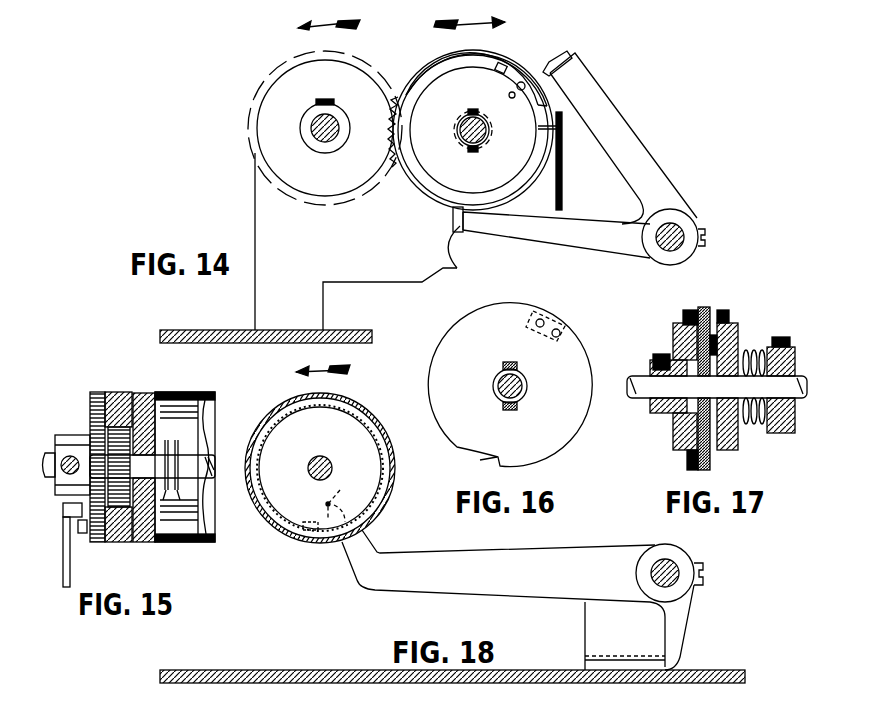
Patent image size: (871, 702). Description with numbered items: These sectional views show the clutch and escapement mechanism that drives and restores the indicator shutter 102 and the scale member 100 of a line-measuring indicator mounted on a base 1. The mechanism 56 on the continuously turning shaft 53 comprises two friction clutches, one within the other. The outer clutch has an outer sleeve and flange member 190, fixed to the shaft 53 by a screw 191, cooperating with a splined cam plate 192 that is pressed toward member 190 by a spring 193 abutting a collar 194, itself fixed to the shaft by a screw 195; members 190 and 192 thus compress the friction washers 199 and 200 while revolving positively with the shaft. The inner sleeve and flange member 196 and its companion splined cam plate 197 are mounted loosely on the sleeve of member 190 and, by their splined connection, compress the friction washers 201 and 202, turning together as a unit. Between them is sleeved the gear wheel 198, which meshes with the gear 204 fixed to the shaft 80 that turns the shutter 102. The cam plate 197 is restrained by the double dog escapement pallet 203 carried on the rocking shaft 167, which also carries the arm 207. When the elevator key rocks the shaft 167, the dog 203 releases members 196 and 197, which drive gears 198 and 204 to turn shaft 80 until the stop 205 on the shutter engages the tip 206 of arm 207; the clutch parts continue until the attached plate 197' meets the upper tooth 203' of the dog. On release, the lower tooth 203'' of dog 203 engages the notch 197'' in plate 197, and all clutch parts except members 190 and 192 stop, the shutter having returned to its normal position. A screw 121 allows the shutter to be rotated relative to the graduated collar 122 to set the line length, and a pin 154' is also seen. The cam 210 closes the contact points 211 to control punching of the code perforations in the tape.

In FIG. 14, the base 1 is at (343, 331).
In FIG. 14, the shaft 53 is at (461, 139).
In FIG. 16, the shaft 53 is at (493, 386).
In FIG. 17, the shaft 53 is at (640, 385).
In FIG. 17, the mechanism 56 is at (665, 433).
In FIG. 14, the shaft 80 is at (320, 138).
In FIG. 15, the shaft 80 is at (205, 477).
In FIG. 18, the shaft 80 is at (348, 443).
In FIG. 15, the scale member 100 is at (175, 392).
In FIG. 18, the scale member 100 is at (270, 426).
In FIG. 15, the helical-edged shutter 102 is at (140, 393).
In FIG. 18, the helical-edged shutter 102 is at (292, 401).
In FIG. 15, the screw 121 is at (122, 541).
In FIG. 15, the collar 122 is at (90, 416).
In FIG. 14, the pin 154' is at (488, 87).
In FIG. 14, the rocking shaft 167 is at (661, 246).
In FIG. 18, the rocking shaft 167 is at (676, 571).
In FIG. 17, the outer sleeve and flange member 190 is at (675, 331).
In FIG. 17, the screw 191 is at (656, 355).
In FIG. 17, the splined cam plate 192 is at (740, 329).
In FIG. 17, the spring 193 is at (755, 350).
In FIG. 17, the collar 194 is at (777, 433).
In FIG. 17, the screw 195 is at (786, 346).
In FIG. 17, the inner sleeve and flange member 196 is at (716, 330).
In FIG. 14, the splined cam plate 197 is at (460, 149).
In FIG. 16, the splined cam plate 197 is at (516, 385).
In FIG. 17, the splined cam plate 197 is at (680, 374).
In FIG. 16, the plate 197' is at (570, 324).
In FIG. 16, the notch 197'' is at (513, 446).
In FIG. 14, the gear wheel 198 is at (410, 97).
In FIG. 17, the gear wheel 198 is at (687, 461).
In FIG. 17, the friction washer 199 is at (685, 318).
In FIG. 17, the friction washer 200 is at (726, 322).
In FIG. 17, the friction washer 201 is at (655, 404).
In FIG. 17, the friction washer 202 is at (740, 440).
In FIG. 14, the double dog escapement pallet 203 is at (580, 155).
In FIG. 14, the upper tooth 203' is at (578, 55).
In FIG. 14, the lower tooth 203'' is at (410, 278).
In FIG. 14, the gear 204 is at (392, 61).
In FIG. 15, the stop 205 is at (80, 527).
In FIG. 18, the stop 205 is at (300, 543).
In FIG. 15, the tip 206 is at (63, 511).
In FIG. 18, the tip 206 is at (341, 497).
In FIG. 15, the arm 207 is at (70, 568).
In FIG. 18, the arm 207 is at (472, 562).
In FIG. 14, the cam 210 is at (462, 60).
In FIG. 14, the contact points 211 is at (562, 194).